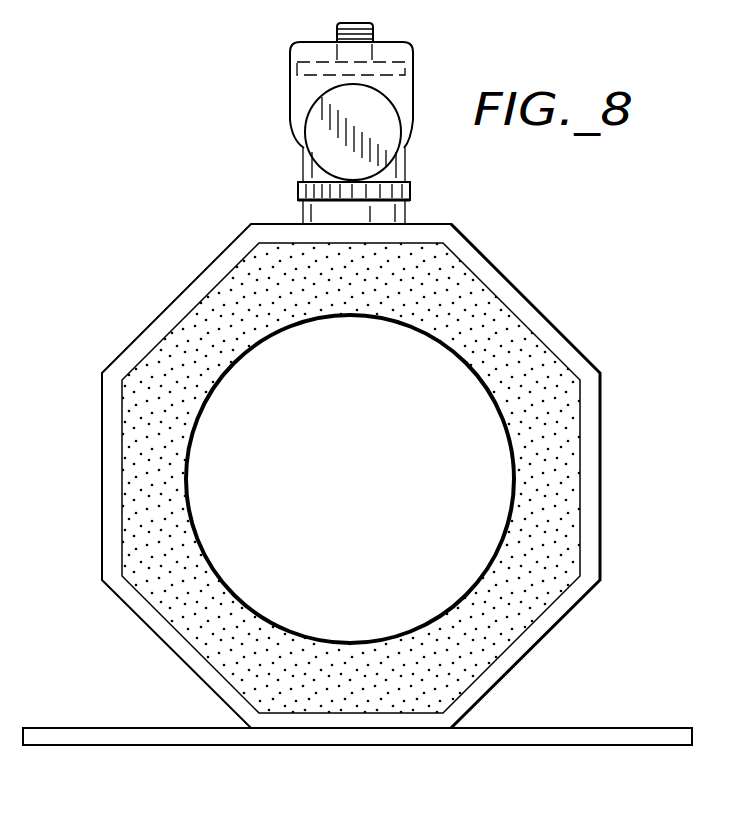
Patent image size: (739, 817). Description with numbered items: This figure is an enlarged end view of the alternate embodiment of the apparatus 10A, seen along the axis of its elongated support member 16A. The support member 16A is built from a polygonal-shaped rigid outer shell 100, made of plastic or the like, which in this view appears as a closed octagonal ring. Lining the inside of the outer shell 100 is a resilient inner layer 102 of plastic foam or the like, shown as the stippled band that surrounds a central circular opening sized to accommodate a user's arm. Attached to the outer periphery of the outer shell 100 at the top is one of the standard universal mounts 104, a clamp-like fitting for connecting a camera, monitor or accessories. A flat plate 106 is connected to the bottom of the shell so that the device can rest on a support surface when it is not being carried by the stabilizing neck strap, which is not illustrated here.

The apparatus 10A is at (394, 475).
The elongated support member 16A is at (602, 432).
The rigid outer shell 100 is at (596, 512).
The resilient inner layer 102 is at (205, 308).
The universal mount 104 is at (298, 100).
The flat plate 106 is at (625, 735).